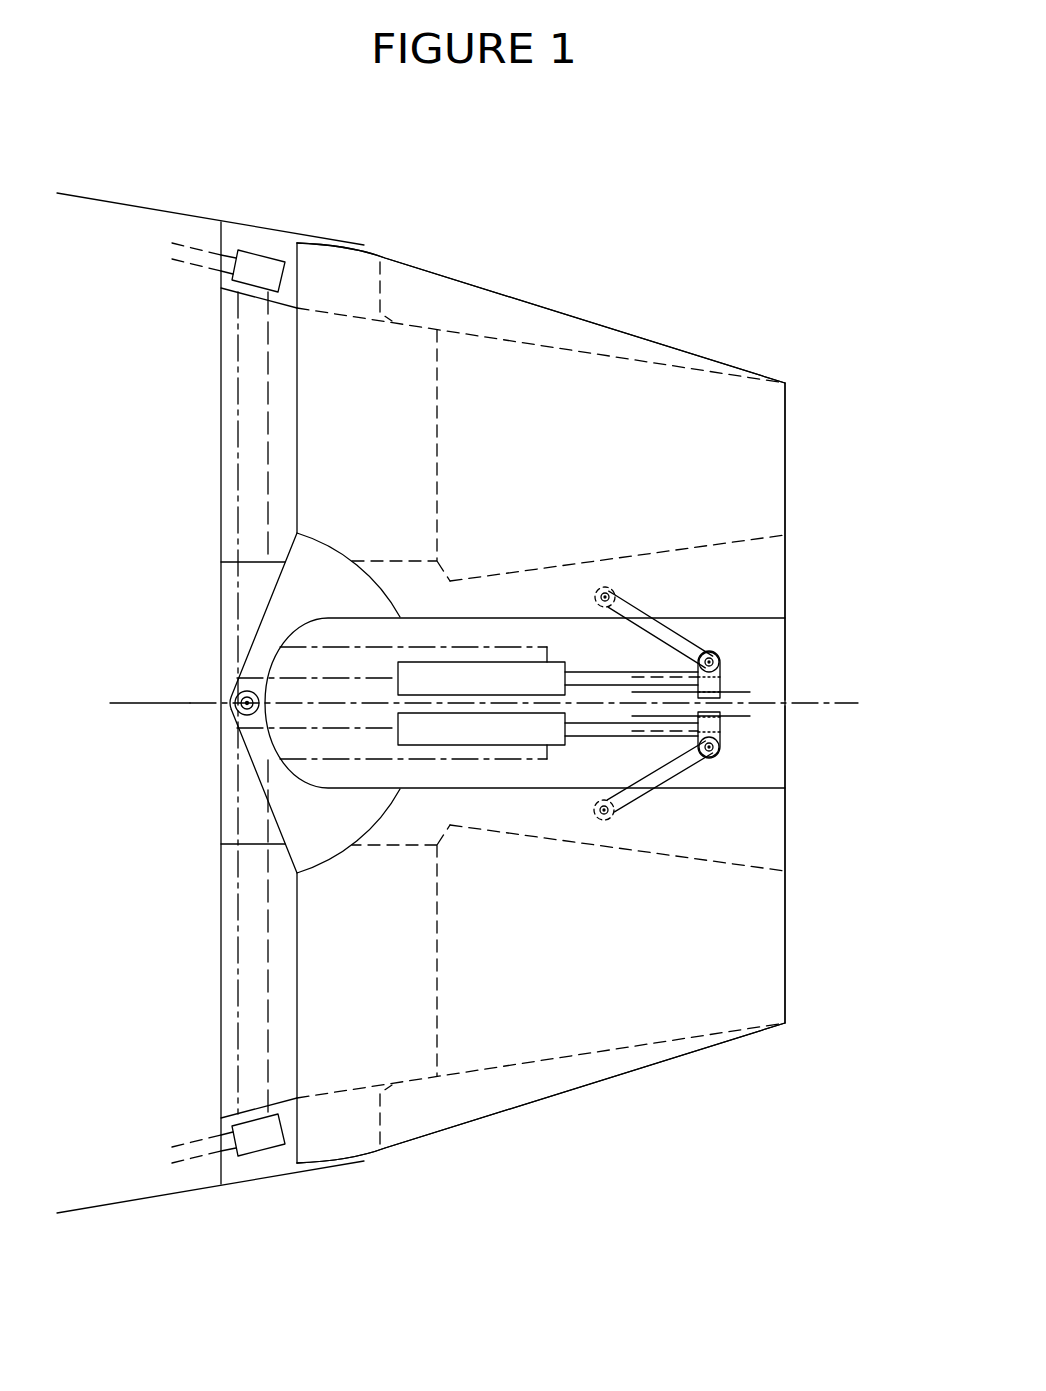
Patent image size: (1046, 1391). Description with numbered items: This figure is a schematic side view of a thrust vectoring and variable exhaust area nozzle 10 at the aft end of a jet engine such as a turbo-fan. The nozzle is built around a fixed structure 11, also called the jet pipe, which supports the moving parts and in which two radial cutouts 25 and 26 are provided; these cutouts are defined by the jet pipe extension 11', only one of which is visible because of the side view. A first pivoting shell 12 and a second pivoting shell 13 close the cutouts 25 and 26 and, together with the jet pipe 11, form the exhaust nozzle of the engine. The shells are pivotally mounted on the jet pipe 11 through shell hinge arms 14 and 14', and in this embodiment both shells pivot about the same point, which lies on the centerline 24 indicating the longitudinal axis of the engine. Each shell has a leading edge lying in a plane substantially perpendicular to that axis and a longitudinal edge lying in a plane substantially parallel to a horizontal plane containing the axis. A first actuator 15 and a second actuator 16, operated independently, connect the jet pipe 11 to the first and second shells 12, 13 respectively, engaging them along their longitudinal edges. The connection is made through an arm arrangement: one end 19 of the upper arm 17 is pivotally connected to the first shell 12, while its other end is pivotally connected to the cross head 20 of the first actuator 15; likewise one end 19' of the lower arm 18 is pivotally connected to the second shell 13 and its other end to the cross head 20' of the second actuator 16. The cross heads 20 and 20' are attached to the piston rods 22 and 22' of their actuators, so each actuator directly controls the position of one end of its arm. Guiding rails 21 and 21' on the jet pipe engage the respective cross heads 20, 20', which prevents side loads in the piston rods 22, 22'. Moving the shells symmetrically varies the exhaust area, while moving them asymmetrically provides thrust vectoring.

The thrust vectoring and variable exhaust area nozzle 10 is at (82, 238).
The fixed structure 11 is at (431, 385).
The jet pipe extension 11' is at (635, 764).
The first pivoting shell 12 is at (622, 331).
The second pivoting shell 13 is at (627, 1075).
The shell hinge arm 14 is at (248, 605).
The shell hinge arm 14' is at (250, 805).
The first actuator 15 is at (447, 678).
The second actuator 16 is at (460, 730).
The upper arm 17 is at (671, 630).
The lower arm 18 is at (672, 785).
The end of upper arm 19 is at (647, 514).
The end of lower arm 19' is at (626, 868).
The cross head 20 is at (807, 616).
The cross head 20' is at (809, 795).
The guiding rail 21 is at (817, 659).
The guiding rail 21' is at (815, 757).
The piston rod 22 is at (618, 557).
The piston rod 22' is at (603, 832).
The centerline 24 is at (130, 705).
The radial cutout 25 is at (580, 400).
The radial cutout 26 is at (673, 984).